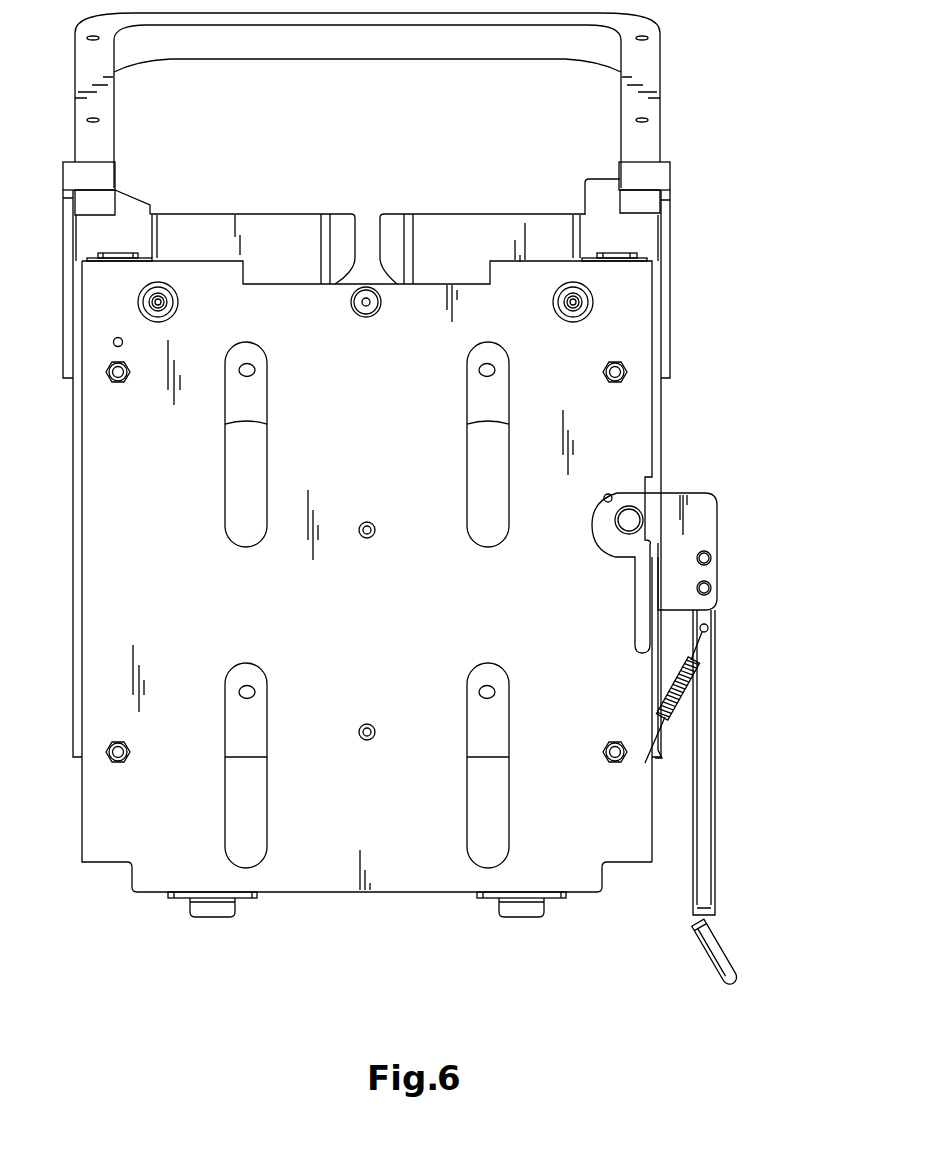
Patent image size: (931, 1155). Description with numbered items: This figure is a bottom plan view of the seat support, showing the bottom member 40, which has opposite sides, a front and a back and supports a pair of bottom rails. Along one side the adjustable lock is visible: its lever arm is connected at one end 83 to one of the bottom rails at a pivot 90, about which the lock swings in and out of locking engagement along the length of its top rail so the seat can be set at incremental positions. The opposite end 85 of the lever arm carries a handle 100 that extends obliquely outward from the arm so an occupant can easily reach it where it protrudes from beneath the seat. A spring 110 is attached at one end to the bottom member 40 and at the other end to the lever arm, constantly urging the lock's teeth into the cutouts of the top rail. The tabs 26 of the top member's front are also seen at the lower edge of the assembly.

The bottom member 40 is at (385, 432).
The tabs 26 is at (215, 918).
The pivot 90 is at (636, 518).
The end of lever arm 83 is at (718, 610).
The end of lever arm 85 is at (718, 902).
The spring 110 is at (688, 710).
The handle 100 is at (710, 955).